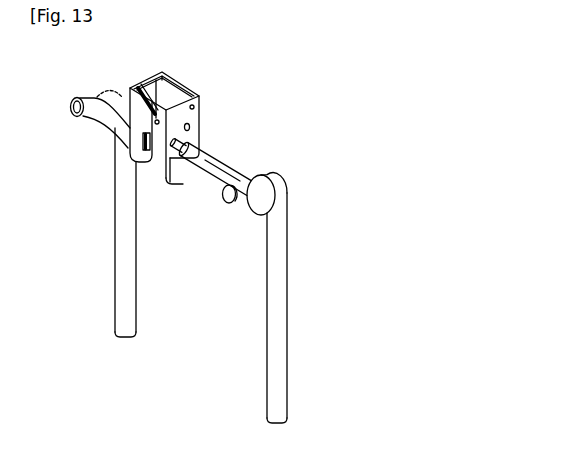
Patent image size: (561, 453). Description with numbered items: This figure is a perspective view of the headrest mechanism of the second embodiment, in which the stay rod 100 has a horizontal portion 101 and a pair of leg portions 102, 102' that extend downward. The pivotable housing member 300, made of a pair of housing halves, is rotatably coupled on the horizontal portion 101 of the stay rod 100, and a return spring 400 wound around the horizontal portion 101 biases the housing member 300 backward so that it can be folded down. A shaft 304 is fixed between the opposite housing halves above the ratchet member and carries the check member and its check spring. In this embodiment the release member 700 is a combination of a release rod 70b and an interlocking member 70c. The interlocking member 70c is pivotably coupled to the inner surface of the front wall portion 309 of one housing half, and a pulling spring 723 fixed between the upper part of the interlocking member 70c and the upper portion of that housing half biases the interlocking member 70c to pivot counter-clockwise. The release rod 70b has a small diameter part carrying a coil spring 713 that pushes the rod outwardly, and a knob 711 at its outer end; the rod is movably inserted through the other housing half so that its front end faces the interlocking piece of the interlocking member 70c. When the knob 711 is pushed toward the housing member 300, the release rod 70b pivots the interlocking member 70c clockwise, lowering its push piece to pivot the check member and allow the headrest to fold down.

The stay rod 100 is at (290, 332).
The horizontal portion 101 is at (207, 180).
The leg portion 102 is at (86, 230).
The leg portion 102' is at (320, 305).
The pivotable housing member 300 is at (202, 98).
The shaft 304 is at (173, 87).
The front wall portion 309 is at (122, 125).
The return spring 400 is at (150, 165).
The release member 700 is at (343, 141).
The release rod 70b is at (232, 167).
The interlocking member 70c is at (143, 90).
The knob 711 is at (268, 198).
The coil spring 713 is at (200, 131).
The pulling spring 723 is at (118, 95).